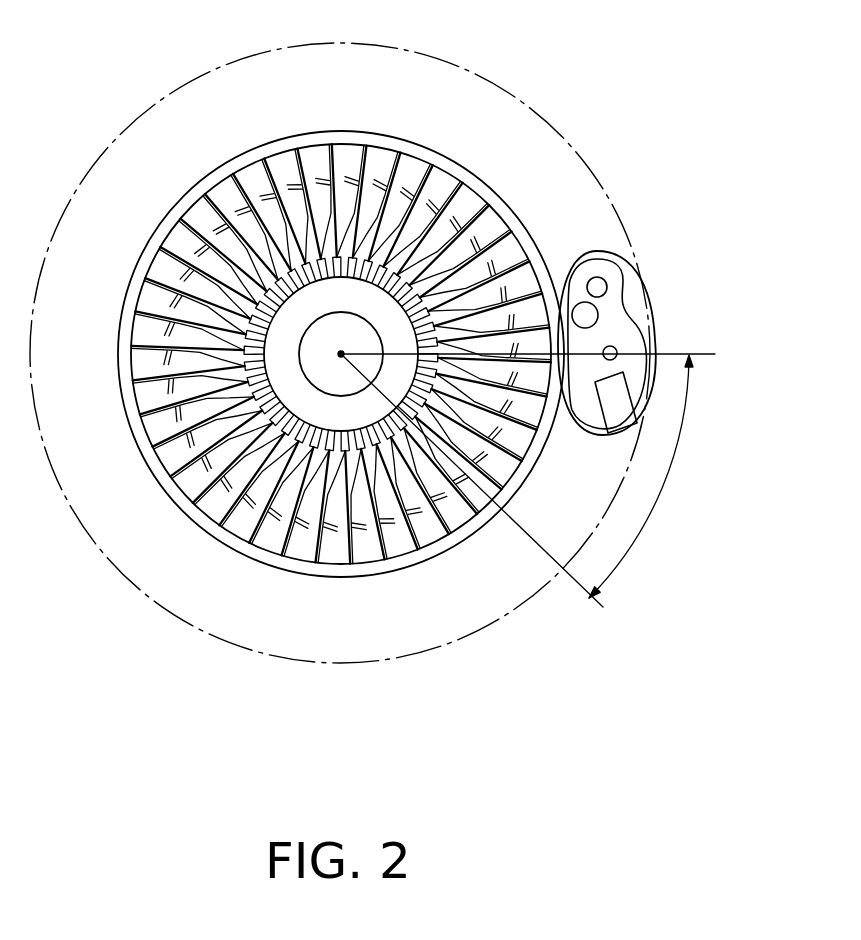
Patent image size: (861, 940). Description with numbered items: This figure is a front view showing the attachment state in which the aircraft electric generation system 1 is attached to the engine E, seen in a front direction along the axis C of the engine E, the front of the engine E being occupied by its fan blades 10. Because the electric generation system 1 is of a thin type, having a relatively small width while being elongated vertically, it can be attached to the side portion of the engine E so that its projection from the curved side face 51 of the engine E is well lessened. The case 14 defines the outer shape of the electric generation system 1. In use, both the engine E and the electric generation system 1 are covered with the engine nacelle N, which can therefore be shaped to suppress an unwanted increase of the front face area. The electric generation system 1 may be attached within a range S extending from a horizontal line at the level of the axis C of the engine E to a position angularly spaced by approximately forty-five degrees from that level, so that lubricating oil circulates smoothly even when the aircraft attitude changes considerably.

The engine E is at (376, 366).
The engine nacelle N is at (171, 614).
The side face 51 is at (522, 206).
The fan blades 10 is at (456, 500).
The axis C is at (341, 355).
The range S is at (528, 480).
The aircraft electric generation system 1 is at (658, 275).
The case 14 is at (633, 301).